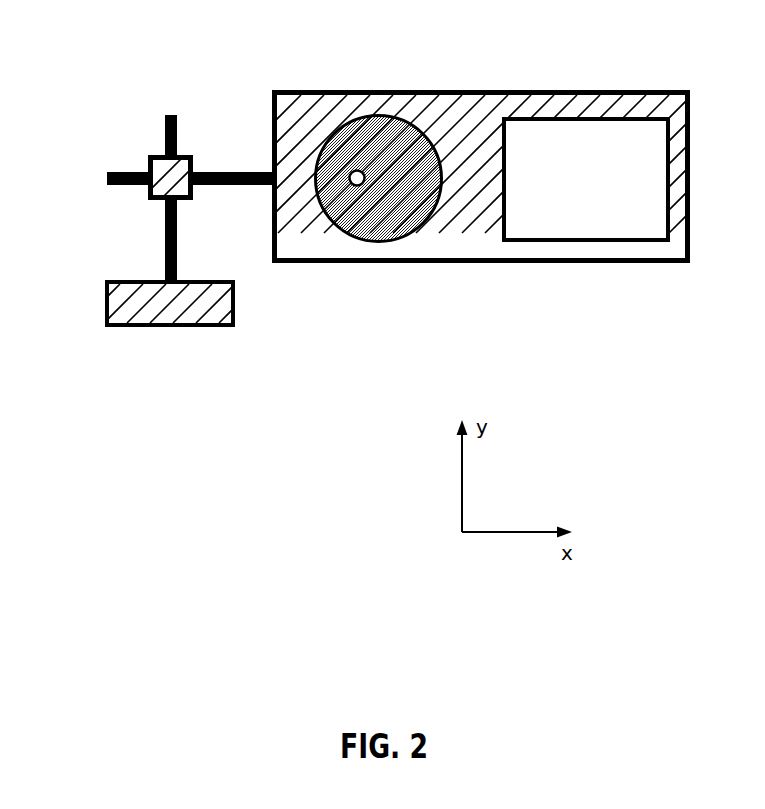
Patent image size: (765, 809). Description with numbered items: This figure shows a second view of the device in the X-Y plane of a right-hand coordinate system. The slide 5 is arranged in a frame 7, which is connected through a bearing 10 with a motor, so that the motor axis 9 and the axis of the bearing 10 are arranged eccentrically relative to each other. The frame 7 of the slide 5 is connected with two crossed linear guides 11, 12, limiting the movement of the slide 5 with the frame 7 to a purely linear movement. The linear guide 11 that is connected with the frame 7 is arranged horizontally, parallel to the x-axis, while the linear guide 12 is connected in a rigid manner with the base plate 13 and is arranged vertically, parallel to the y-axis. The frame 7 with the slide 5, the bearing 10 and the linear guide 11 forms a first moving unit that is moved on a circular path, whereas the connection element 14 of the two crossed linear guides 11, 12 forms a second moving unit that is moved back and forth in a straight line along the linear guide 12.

The slide 5 is at (565, 192).
The frame 7 is at (465, 200).
The motor axis 9 is at (356, 190).
The bearing 10 is at (390, 203).
The linear guide 11 is at (112, 187).
The linear guide 12 is at (170, 117).
The base plate 13 is at (167, 307).
The connection element 14 is at (150, 155).